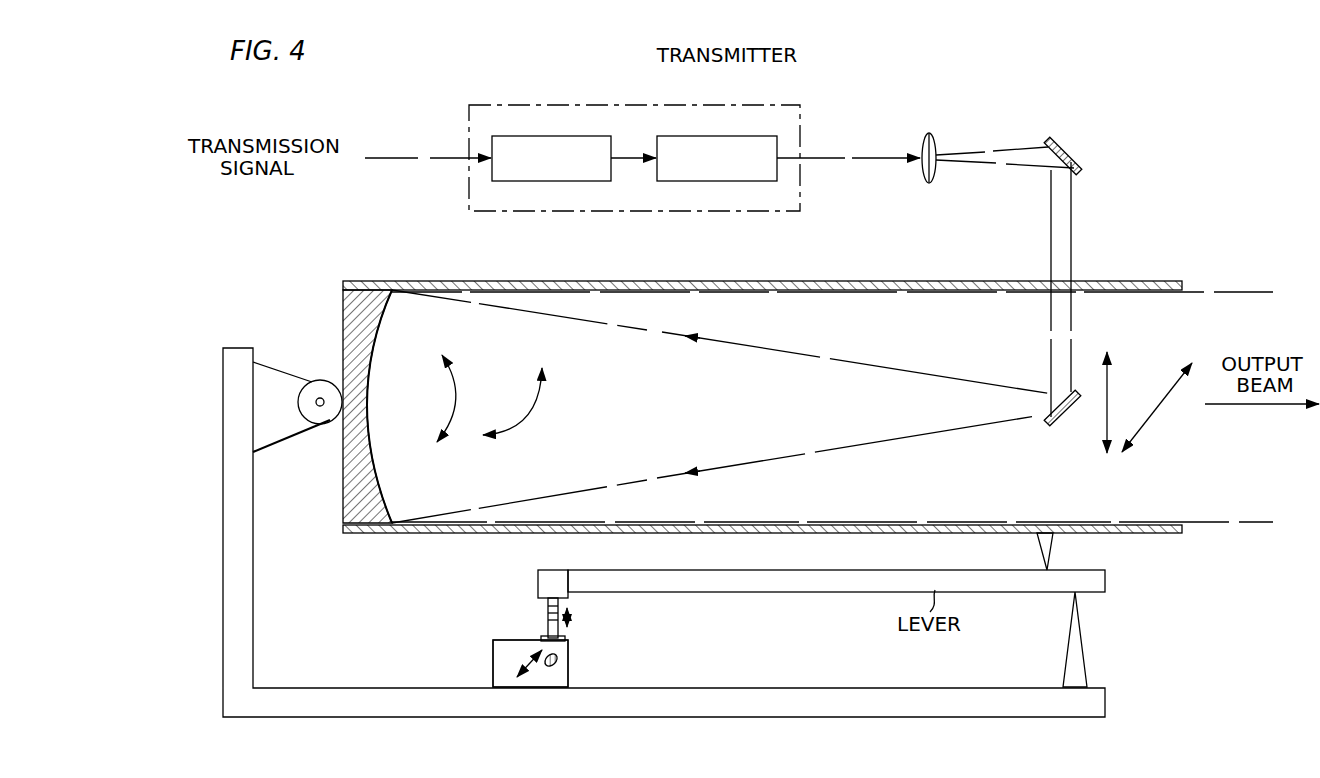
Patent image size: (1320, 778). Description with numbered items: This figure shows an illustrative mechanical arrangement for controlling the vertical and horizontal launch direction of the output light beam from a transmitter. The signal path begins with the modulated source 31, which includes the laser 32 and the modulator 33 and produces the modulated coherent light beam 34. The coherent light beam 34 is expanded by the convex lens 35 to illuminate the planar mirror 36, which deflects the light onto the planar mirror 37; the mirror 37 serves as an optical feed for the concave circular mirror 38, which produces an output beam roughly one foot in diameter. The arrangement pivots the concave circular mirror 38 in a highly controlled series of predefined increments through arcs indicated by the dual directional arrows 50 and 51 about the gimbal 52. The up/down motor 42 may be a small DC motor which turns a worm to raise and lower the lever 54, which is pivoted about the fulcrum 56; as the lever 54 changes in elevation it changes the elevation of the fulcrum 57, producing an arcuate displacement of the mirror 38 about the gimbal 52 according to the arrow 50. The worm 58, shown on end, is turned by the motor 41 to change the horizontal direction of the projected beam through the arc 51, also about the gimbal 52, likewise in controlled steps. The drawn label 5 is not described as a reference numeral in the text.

The modulated source 31 is at (630, 211).
The laser 32 is at (544, 181).
The modulator 33 is at (703, 181).
The modulated coherent light beam 34 is at (872, 160).
The convex lens 35 is at (929, 132).
The mirror 36 is at (1072, 148).
The mirror 37 is at (1063, 420).
The concave circular mirror 38 is at (378, 327).
The dual directional arrow 50 is at (460, 383).
The dual directional arrow 51 is at (538, 406).
The gimbal 52 is at (327, 418).
The lever 54 is at (782, 592).
The fulcrum 56 is at (1080, 598).
The fulcrum 57 is at (1052, 568).
The screw shaft 5 is at (548, 614).
The motor 41 is at (620, 643).
The up/down motor 42 is at (530, 663).
The worm 58 is at (550, 668).